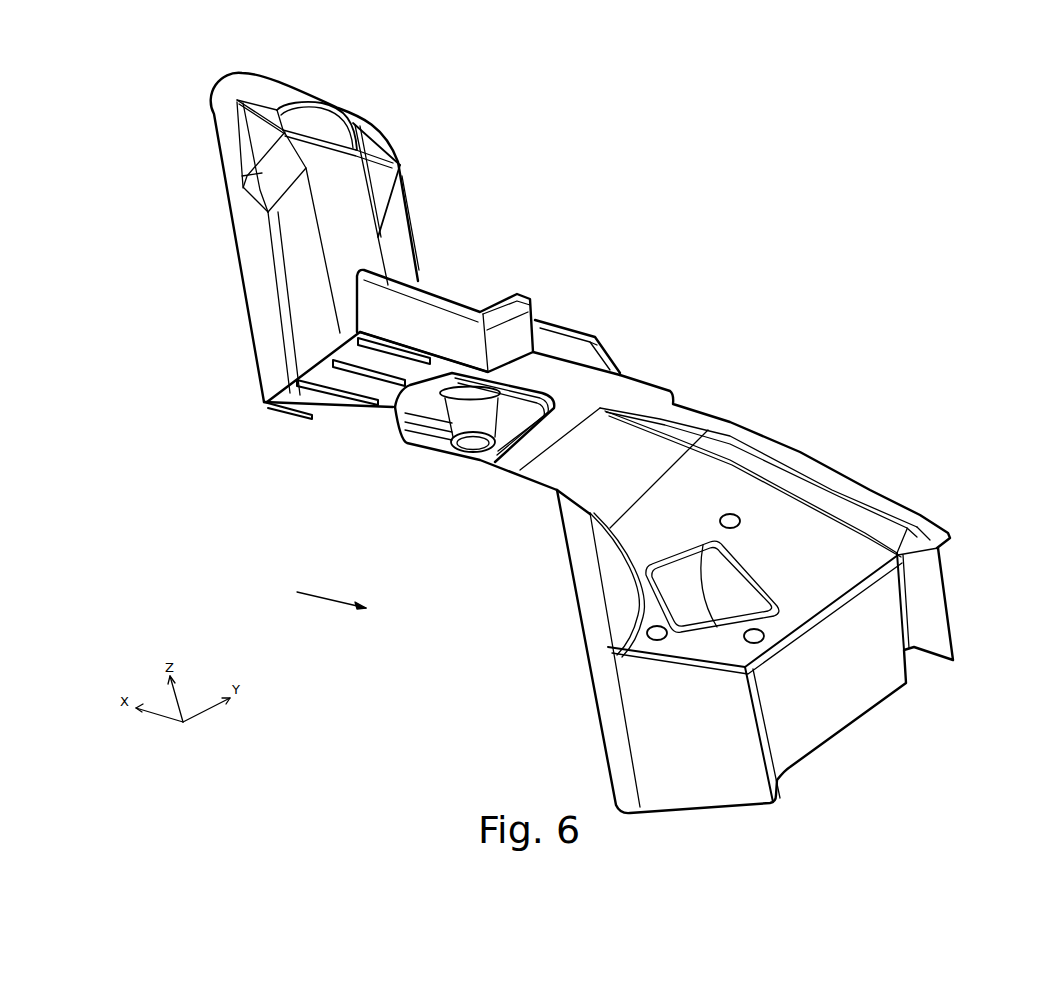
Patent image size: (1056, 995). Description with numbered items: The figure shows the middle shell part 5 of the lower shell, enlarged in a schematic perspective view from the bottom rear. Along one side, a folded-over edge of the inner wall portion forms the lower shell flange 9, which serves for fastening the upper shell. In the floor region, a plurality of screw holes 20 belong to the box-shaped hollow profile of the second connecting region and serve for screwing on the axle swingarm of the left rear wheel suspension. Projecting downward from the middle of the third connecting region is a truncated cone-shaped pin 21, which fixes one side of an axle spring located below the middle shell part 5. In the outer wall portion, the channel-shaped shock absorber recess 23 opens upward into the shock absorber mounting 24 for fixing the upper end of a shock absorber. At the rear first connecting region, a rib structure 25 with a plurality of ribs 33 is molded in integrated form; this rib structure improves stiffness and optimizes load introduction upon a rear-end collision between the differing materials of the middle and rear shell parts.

The middle shell part 5 is at (190, 103).
The lower shell flange 9 is at (752, 440).
The screw holes 20 is at (734, 514).
The post 21 is at (452, 443).
The shock absorber recess 23 is at (362, 258).
The shock absorber mounting 24 is at (330, 120).
The rib structure 25 is at (285, 412).
The ribs 33 is at (372, 392).